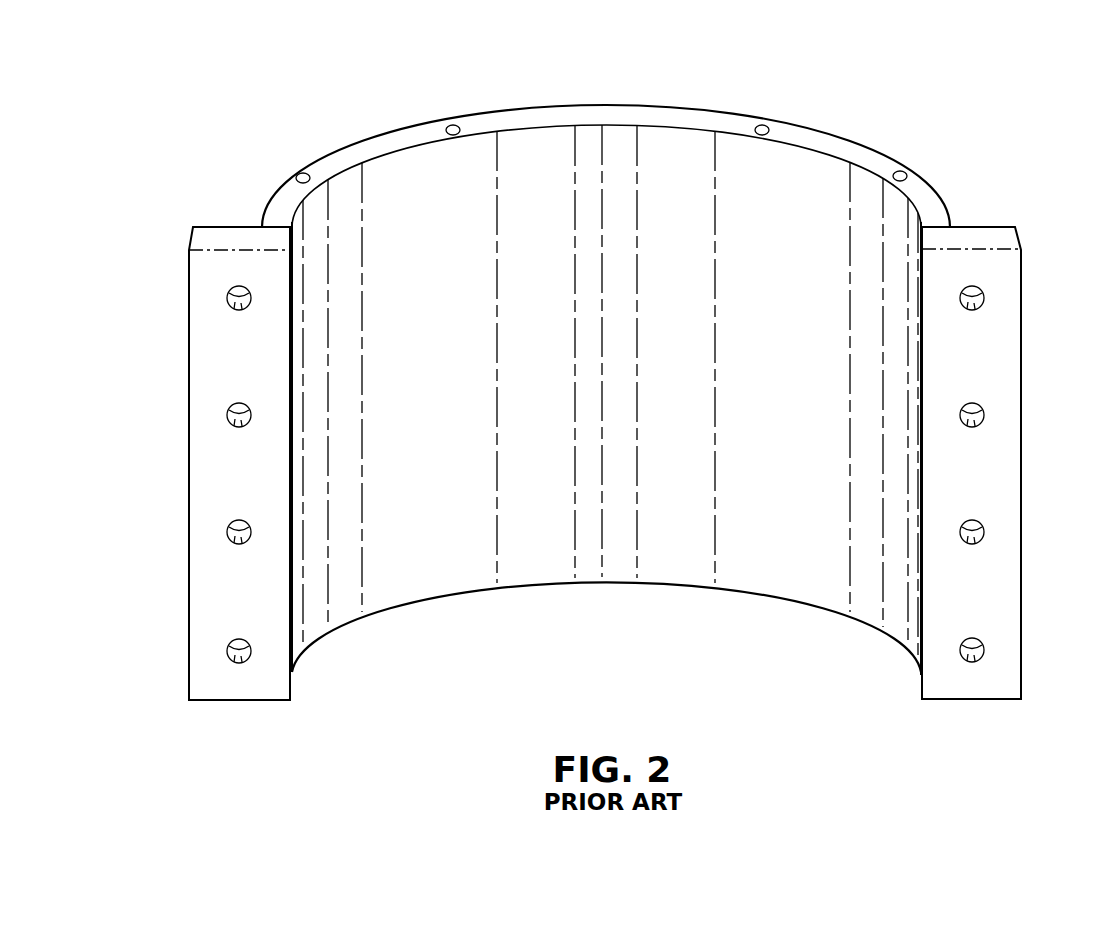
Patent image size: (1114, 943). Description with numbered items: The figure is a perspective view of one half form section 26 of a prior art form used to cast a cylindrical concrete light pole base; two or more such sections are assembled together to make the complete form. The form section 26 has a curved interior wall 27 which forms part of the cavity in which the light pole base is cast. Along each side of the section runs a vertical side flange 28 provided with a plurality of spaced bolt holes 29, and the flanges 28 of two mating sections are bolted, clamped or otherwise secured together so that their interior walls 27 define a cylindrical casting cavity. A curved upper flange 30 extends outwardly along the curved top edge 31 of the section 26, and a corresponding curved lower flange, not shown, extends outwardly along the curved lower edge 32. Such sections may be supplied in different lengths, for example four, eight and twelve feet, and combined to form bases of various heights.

The form section 26 is at (868, 92).
The curved interior wall 27 is at (397, 578).
The vertical side flange 28 is at (189, 463).
The bolt holes 29 is at (232, 292).
The curved upper flange 30 is at (586, 103).
The curved top edge 31 is at (676, 130).
The curved lower edge 32 is at (741, 588).